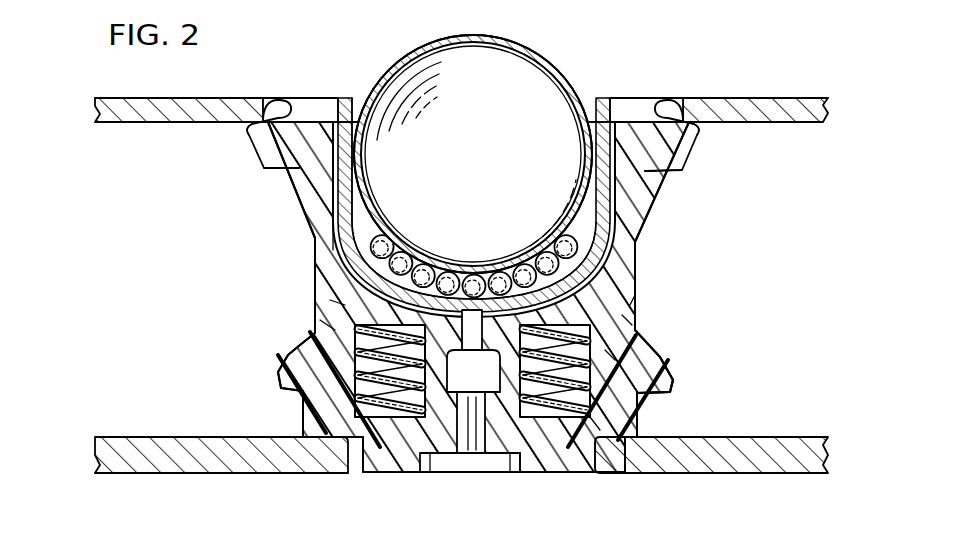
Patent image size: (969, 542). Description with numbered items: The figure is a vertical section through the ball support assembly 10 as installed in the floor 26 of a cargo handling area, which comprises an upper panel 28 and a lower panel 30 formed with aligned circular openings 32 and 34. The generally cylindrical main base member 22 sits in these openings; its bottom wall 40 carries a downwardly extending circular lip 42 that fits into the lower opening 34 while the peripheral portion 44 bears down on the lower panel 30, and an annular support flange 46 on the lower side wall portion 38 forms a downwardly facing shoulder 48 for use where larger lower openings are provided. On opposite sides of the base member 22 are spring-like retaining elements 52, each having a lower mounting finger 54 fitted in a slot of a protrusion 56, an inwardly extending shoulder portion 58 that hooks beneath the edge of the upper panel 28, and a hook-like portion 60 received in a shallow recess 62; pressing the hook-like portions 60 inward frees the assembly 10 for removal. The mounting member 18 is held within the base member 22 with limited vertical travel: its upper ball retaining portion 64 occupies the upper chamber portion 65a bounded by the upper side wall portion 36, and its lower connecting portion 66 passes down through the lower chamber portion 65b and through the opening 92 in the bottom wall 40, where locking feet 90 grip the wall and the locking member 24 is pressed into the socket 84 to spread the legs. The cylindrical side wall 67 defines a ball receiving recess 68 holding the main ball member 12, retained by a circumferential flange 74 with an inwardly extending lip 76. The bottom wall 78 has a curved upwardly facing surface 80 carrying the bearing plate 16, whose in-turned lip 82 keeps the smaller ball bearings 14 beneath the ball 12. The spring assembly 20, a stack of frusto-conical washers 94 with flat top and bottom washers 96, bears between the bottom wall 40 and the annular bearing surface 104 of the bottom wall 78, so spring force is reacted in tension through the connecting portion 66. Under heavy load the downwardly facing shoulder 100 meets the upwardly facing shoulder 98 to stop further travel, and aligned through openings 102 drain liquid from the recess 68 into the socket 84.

The ball support assembly 10 is at (554, 46).
The main ball member 12 is at (563, 58).
The ball bearings 14 is at (527, 272).
The bearing plate 16 is at (636, 266).
The mounting member 18 is at (622, 215).
The spring assembly 20 is at (592, 420).
The main base member 22 is at (646, 326).
The locking member 24 is at (440, 458).
The floor 26 is at (805, 95).
The upper panel 28 is at (748, 102).
The lower panel 30 is at (800, 437).
The upper opening 32 is at (262, 94).
The lower opening 34 is at (348, 472).
The upper side wall portion 36 is at (312, 282).
The lower side wall portion 38 is at (295, 353).
The bottom wall 40 is at (545, 455).
The circular lip 42 is at (598, 450).
The peripheral portion 44 is at (625, 465).
The annular support flange 46 is at (672, 372).
The downwardly facing shoulder 48 is at (660, 392).
The retaining elements 52 is at (248, 130).
The lower mounting finger 54 is at (264, 166).
The protrusion 56 is at (285, 200).
The shoulder portion 58 is at (283, 103).
The hook-like portion 60 is at (288, 100).
The recesses or slots 62 is at (322, 97).
The upper ball retaining portion 64 is at (322, 226).
The upper chamber portion 65a is at (332, 300).
The lower chamber portion 65b is at (305, 405).
The lower connecting portion 66 is at (398, 452).
The cylindrical side wall 67 is at (300, 205).
The ball receiving recess 68 is at (332, 245).
The circumferential flange 74 is at (345, 112).
The circumferential lip 76 is at (352, 125).
The bottom wall 78 is at (325, 325).
The upwardly facing surface 80 is at (442, 282).
The in-turned lip 82 is at (385, 218).
The socket 84 is at (468, 440).
The locking foot 90 is at (378, 455).
The opening 92 is at (525, 448).
The spring-like washers 94 is at (280, 375).
The top and bottom washers 96 is at (340, 345).
The upwardly facing shoulder 98 is at (622, 320).
The downwardly facing shoulder 100 is at (630, 300).
The through openings 102 is at (475, 400).
The bearing surface 104 is at (612, 355).